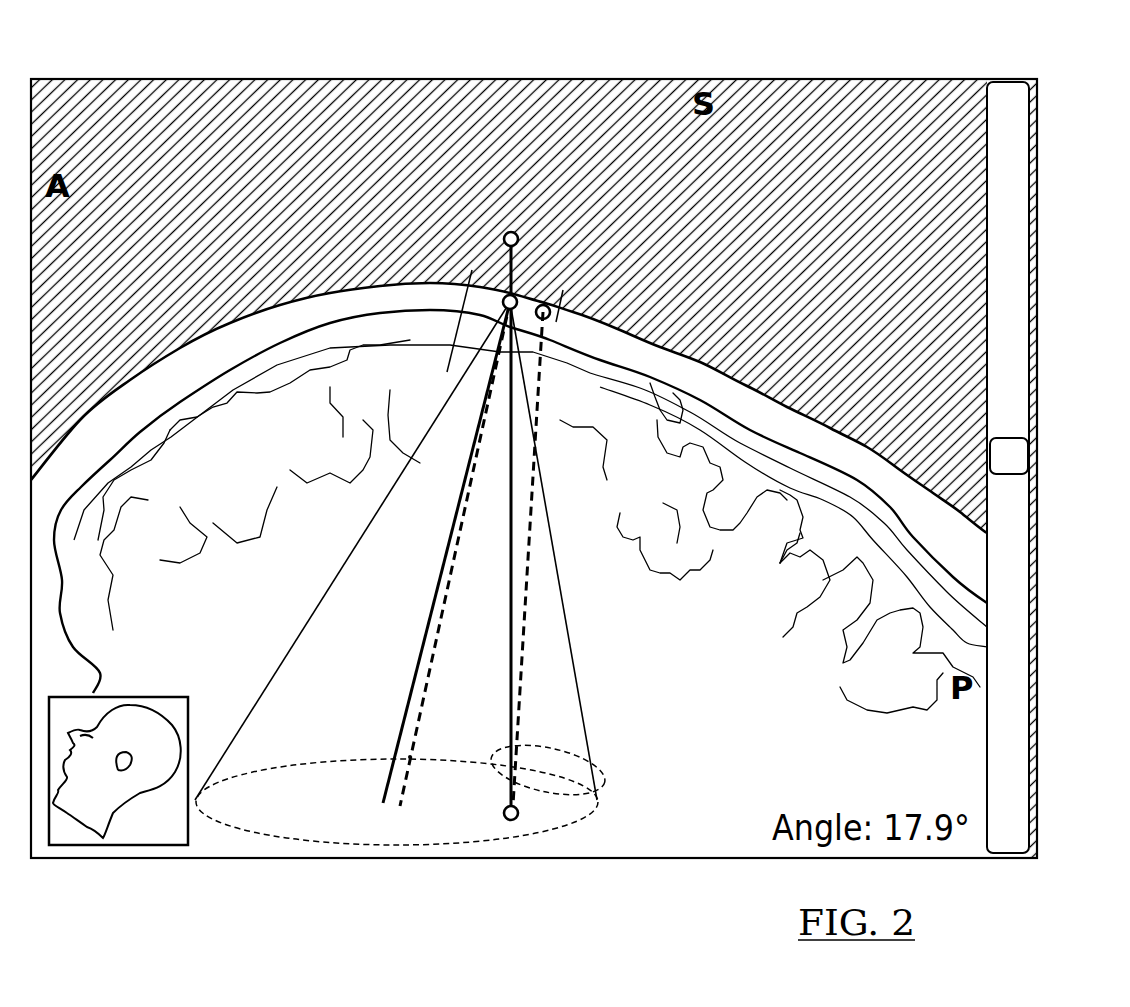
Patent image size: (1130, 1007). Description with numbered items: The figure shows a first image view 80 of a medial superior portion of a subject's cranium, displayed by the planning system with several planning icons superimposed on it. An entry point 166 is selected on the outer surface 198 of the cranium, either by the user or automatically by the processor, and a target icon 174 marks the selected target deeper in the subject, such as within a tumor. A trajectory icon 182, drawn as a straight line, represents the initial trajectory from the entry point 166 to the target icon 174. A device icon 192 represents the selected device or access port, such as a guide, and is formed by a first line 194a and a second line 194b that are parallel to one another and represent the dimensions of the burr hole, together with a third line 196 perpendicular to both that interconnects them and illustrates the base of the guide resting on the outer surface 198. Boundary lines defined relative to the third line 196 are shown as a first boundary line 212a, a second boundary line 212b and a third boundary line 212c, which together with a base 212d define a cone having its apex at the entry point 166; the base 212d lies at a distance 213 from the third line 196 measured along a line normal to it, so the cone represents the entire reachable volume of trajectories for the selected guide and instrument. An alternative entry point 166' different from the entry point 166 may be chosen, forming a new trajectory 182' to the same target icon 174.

The image view 80 is at (1090, 243).
The outer surface of the cranium 198 is at (325, 290).
The first line 194a is at (430, 293).
The second line 194b is at (565, 313).
The device icon 192 is at (456, 245).
The third line 196 is at (483, 275).
The entry point 166 is at (431, 399).
The alternative entry point 166' is at (573, 386).
The trajectory icon 182 is at (440, 557).
The new trajectory 182' is at (580, 558).
The first boundary line 212a is at (298, 637).
The second boundary line 212b is at (587, 728).
The third boundary line 212c is at (403, 713).
The base 212d is at (360, 847).
The distance 213 is at (413, 756).
The target icon 174 is at (511, 820).